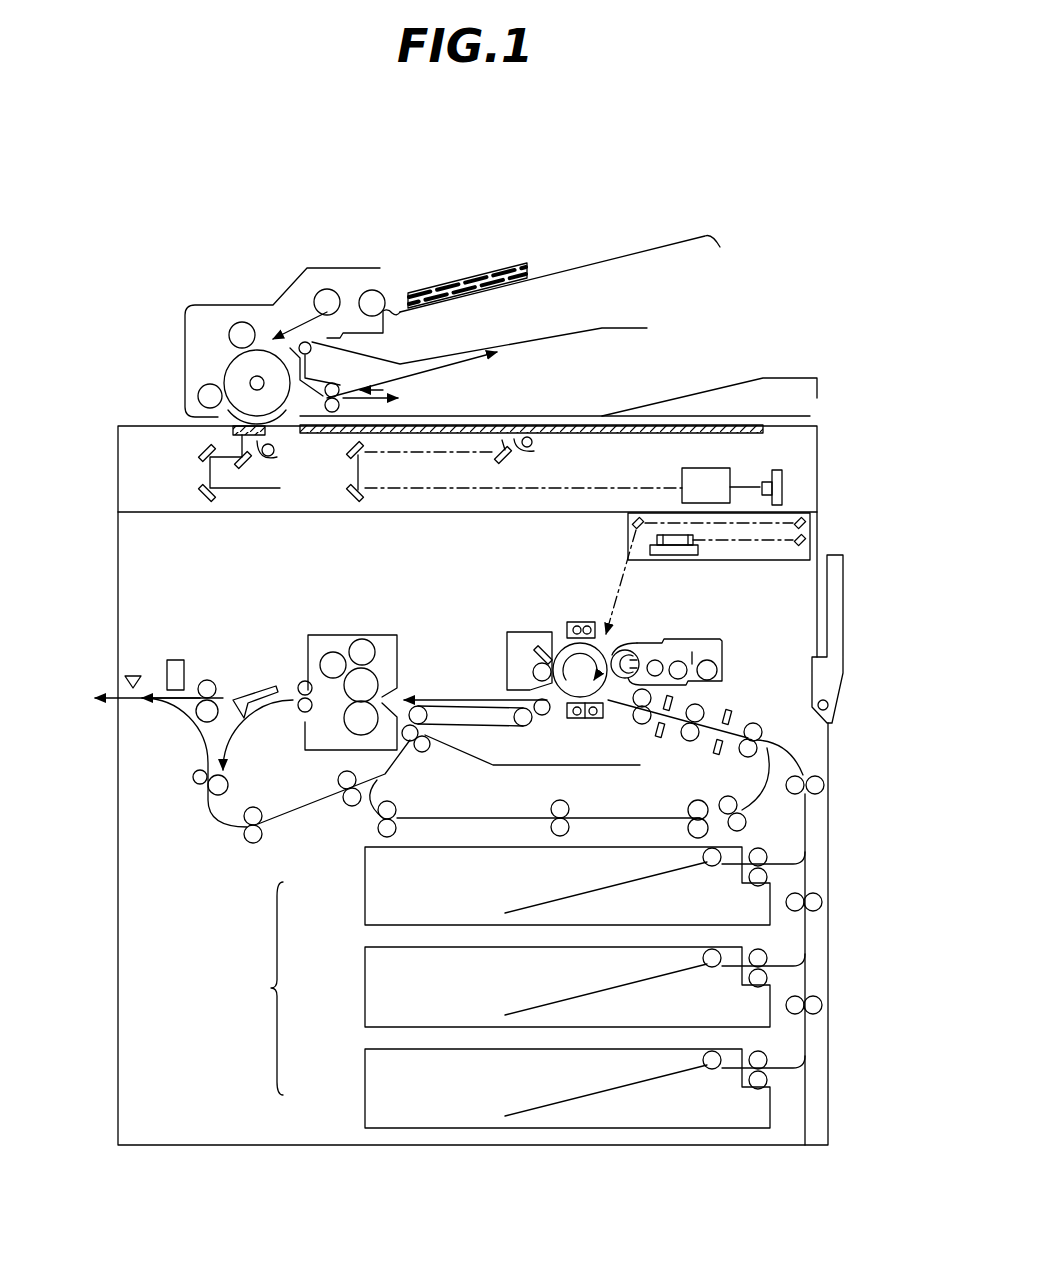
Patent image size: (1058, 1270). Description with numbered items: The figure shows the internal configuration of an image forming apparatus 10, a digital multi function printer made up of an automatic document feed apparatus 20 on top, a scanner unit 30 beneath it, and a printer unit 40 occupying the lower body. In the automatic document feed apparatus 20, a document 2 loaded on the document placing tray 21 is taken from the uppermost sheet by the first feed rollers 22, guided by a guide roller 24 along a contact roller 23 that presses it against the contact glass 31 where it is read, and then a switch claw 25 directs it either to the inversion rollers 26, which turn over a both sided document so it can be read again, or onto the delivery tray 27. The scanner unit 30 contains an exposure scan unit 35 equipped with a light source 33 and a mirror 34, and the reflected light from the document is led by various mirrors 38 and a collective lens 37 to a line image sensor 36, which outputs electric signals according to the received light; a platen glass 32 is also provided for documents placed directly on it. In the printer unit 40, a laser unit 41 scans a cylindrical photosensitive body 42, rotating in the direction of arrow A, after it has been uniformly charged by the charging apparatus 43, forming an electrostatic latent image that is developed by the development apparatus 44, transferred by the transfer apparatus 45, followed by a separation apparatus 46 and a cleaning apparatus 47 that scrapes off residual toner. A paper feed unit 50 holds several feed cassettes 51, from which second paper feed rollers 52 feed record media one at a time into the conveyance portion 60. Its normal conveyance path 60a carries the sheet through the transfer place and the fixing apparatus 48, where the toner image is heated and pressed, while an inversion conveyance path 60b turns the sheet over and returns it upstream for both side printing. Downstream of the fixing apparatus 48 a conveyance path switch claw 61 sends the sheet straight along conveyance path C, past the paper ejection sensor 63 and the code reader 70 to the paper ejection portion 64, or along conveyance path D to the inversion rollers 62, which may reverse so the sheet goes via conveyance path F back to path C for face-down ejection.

The image forming apparatus 10 is at (788, 238).
The automatic document feed apparatus 20 is at (428, 248).
The document placing tray 21 is at (633, 252).
The document 2 is at (520, 263).
The first feed rollers 22 is at (373, 295).
The contact roller 23 is at (230, 362).
The guide roller 24 is at (242, 322).
The switch claw 25 is at (292, 350).
The inversion rollers 26 is at (340, 388).
The delivery tray 27 is at (633, 328).
The scanner unit 30 is at (817, 473).
The contact glass 31 is at (233, 430).
The platen glass 32 is at (587, 425).
The light source 33 is at (528, 436).
The mirror 34 is at (506, 460).
The exposure scan unit 35 is at (534, 448).
The line image sensor 36 is at (778, 468).
The collective lens 37 is at (704, 466).
The mirrors 38 is at (350, 496).
The printer unit 40 is at (830, 768).
The laser unit 41 is at (773, 561).
The photosensitive body 42 is at (563, 643).
The charging apparatus 43 is at (580, 621).
The development apparatus 44 is at (679, 660).
The transfer apparatus 45 is at (596, 719).
The separation apparatus 46 is at (576, 719).
The cleaning apparatus 47 is at (507, 652).
The fixing apparatus 48 is at (363, 633).
The paper feed unit 50 is at (259, 988).
The feed cassettes 51 is at (365, 895).
The second paper feed rollers 52 is at (703, 857).
The conveyance portion 60 is at (797, 753).
The normal conveyance path 60a is at (428, 680).
The inversion conveyance path 60b is at (356, 832).
The conveyance path switch claw 61 is at (250, 697).
The inversion rollers 62 is at (198, 783).
The paper ejection sensor 63 is at (185, 660).
The paper ejection portion 64 is at (110, 712).
The code reader 70 is at (128, 672).
The conveyance path C is at (152, 697).
The conveyance path D is at (233, 740).
The conveyance path F is at (193, 730).